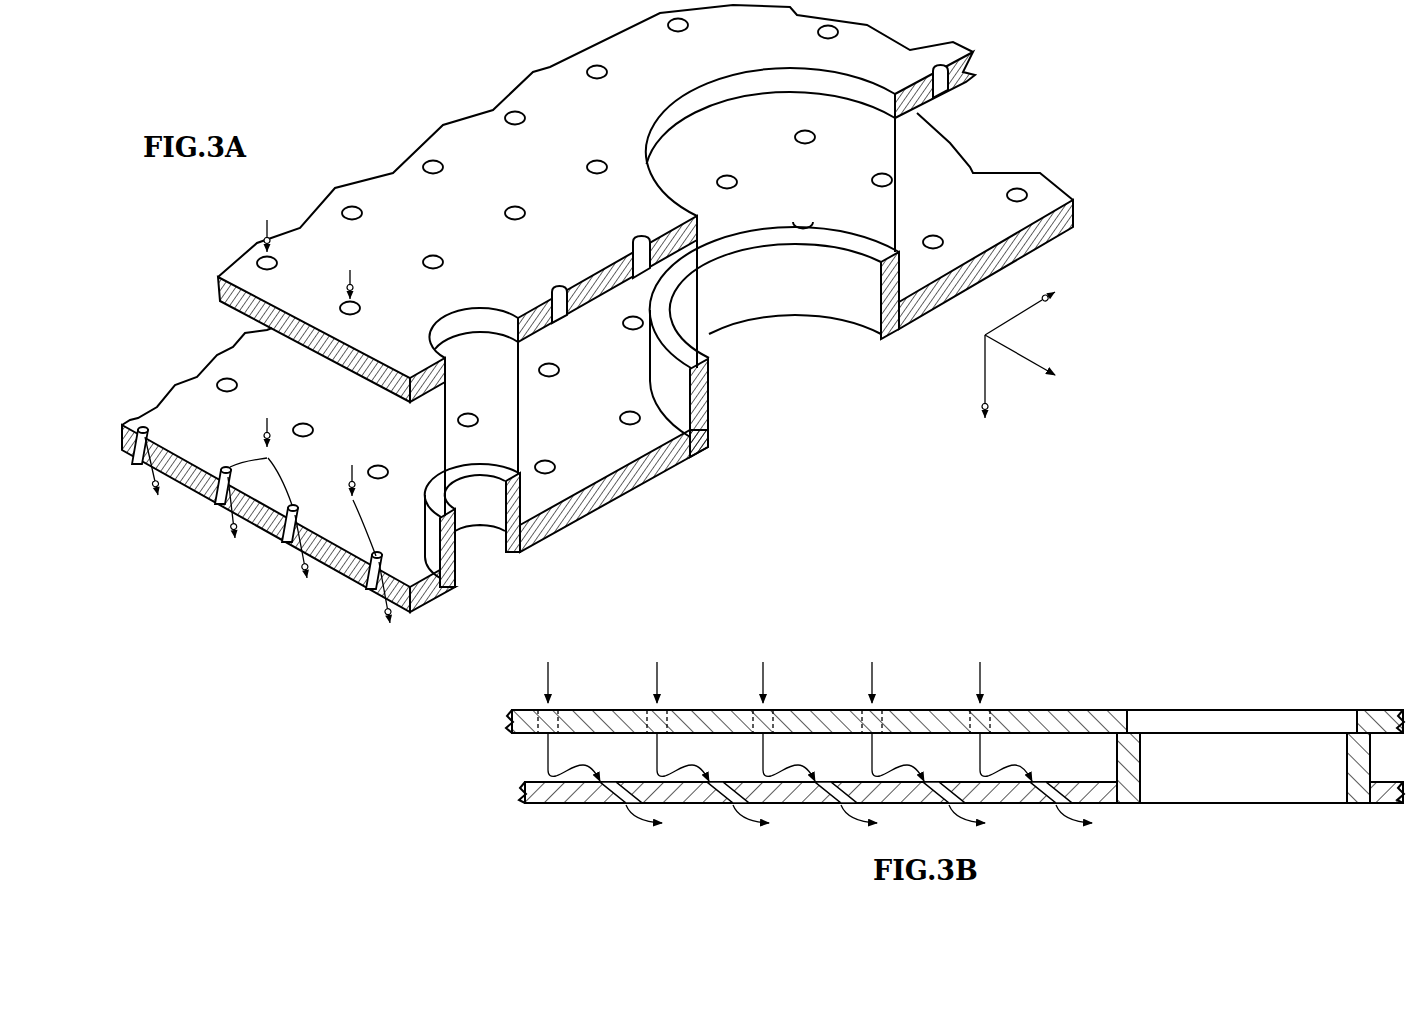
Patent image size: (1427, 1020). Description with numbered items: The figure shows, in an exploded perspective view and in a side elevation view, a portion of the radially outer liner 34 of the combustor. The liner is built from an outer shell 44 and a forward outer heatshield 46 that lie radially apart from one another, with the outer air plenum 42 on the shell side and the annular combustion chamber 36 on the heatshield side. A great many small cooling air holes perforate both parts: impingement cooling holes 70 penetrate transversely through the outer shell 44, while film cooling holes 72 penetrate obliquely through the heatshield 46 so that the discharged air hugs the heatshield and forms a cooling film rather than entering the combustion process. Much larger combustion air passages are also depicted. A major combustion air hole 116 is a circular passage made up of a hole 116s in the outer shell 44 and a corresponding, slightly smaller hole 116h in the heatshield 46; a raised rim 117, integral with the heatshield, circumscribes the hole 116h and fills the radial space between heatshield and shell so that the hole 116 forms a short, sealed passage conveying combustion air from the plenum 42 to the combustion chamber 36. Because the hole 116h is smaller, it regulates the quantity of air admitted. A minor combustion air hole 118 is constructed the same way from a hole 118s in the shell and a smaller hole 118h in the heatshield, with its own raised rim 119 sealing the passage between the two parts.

In FIG. 3A, the radially outer liner 34 is at (185, 260).
In FIG. 3B, the radially outer liner 34 is at (1052, 647).
In FIG. 3A, the outer air plenum 42 is at (414, 104).
In FIG. 3B, the outer air plenum 42 is at (830, 660).
In FIG. 3A, the outer shell 44 is at (392, 182).
In FIG. 3B, the outer shell 44 is at (510, 728).
In FIG. 3A, the forward outer heatshield 46 is at (240, 357).
In FIG. 3B, the forward outer heatshield 46 is at (535, 796).
In FIG. 3A, the annular combustion chamber 36 is at (714, 503).
In FIG. 3B, the annular combustion chamber 36 is at (826, 853).
In FIG. 3A, the impingement cooling holes 70 is at (347, 305).
In FIG. 3B, the impingement cooling holes 70 is at (760, 710).
In FIG. 3A, the film cooling holes 72 is at (228, 468).
In FIG. 3B, the film cooling holes 72 is at (727, 805).
In FIG. 3A, the major combustion air hole 116 is at (782, 362).
In FIG. 3B, the major combustion air hole 116 is at (1288, 712).
In FIG. 3A, the shell hole of major hole 116s is at (727, 93).
In FIG. 3B, the shell hole of major hole 116s is at (1155, 720).
In FIG. 3A, the heatshield hole of major hole 116h is at (852, 308).
In FIG. 3B, the heatshield hole of major hole 116h is at (1320, 783).
In FIG. 3A, the raised rim 117 is at (850, 238).
In FIG. 3B, the raised rim 117 is at (1125, 760).
In FIG. 3A, the minor combustion air hole 118 is at (490, 565).
In FIG. 3A, the shell hole of minor hole 118s is at (485, 322).
In FIG. 3A, the heatshield hole of minor hole 118h is at (488, 515).
In FIG. 3A, the raised rim 119 is at (433, 493).